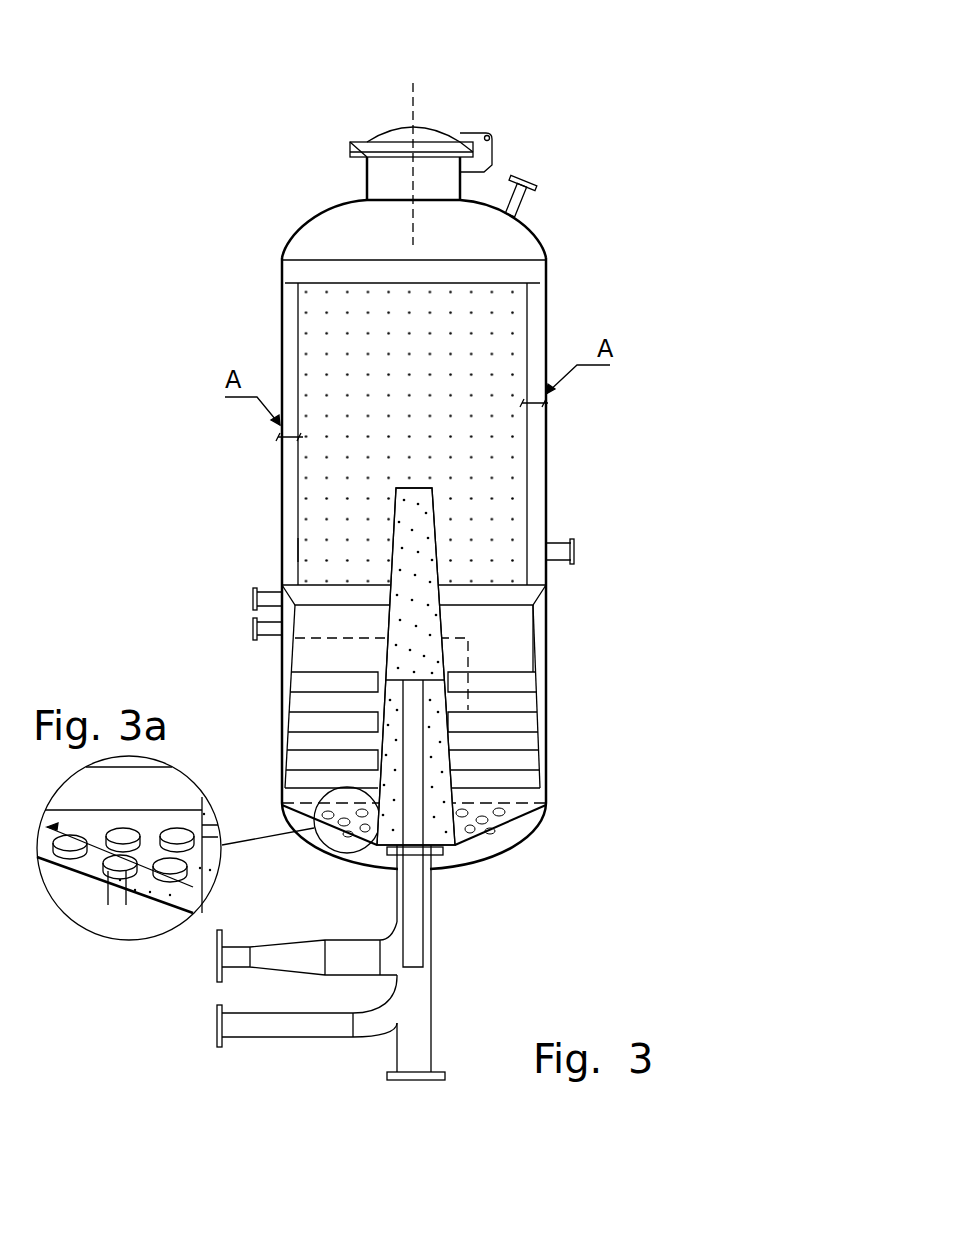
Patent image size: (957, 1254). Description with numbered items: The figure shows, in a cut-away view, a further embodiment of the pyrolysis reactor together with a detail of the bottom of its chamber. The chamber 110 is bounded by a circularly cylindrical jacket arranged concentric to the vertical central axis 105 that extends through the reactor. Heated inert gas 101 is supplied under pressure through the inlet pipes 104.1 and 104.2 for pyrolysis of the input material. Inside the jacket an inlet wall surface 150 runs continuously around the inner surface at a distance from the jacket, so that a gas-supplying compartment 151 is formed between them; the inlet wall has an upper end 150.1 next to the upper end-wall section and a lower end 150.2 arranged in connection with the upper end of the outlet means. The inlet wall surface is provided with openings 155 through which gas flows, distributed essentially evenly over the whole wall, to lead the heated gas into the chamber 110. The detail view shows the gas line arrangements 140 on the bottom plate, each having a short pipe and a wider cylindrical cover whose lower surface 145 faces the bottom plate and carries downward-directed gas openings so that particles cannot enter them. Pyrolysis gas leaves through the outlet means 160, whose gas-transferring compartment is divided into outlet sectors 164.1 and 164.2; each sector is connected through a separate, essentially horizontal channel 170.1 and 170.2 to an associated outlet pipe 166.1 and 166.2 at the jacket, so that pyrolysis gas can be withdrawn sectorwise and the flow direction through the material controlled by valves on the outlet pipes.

In FIG. 3, the heated gas 101 is at (524, 175).
In FIG. 3, the vertical central axis 105 is at (413, 83).
In FIG. 3, the chamber 110 is at (410, 433).
In FIG. 3A, the gas line arrangement 140 is at (120, 863).
In FIG. 3A, the lower surface 145 is at (103, 857).
In FIG. 3, the inlet wall surface 150 is at (300, 307).
In FIG. 3, the upper end of inlet wall 150.1 is at (546, 272).
In FIG. 3, the lower end of inlet wall 150.2 is at (535, 583).
In FIG. 3, the gas supply compartment 151 is at (292, 362).
In FIG. 3, the gas flow openings 155 is at (348, 560).
In FIG. 3, the gas outlet means 160 is at (518, 663).
In FIG. 3, the first outlet sector 164.1 is at (518, 698).
In FIG. 3, the second outlet sector 164.2 is at (315, 699).
In FIG. 3, the first outlet pipe 166.1 is at (253, 593).
In FIG. 3, the second outlet pipe 166.2 is at (253, 630).
In FIG. 3, the first channel 170.1 is at (512, 630).
In FIG. 3, the second channel 170.2 is at (315, 656).
In FIG. 3, the first inlet pipe 104.1 is at (290, 958).
In FIG. 3, the second inlet pipe 104.2 is at (290, 1025).